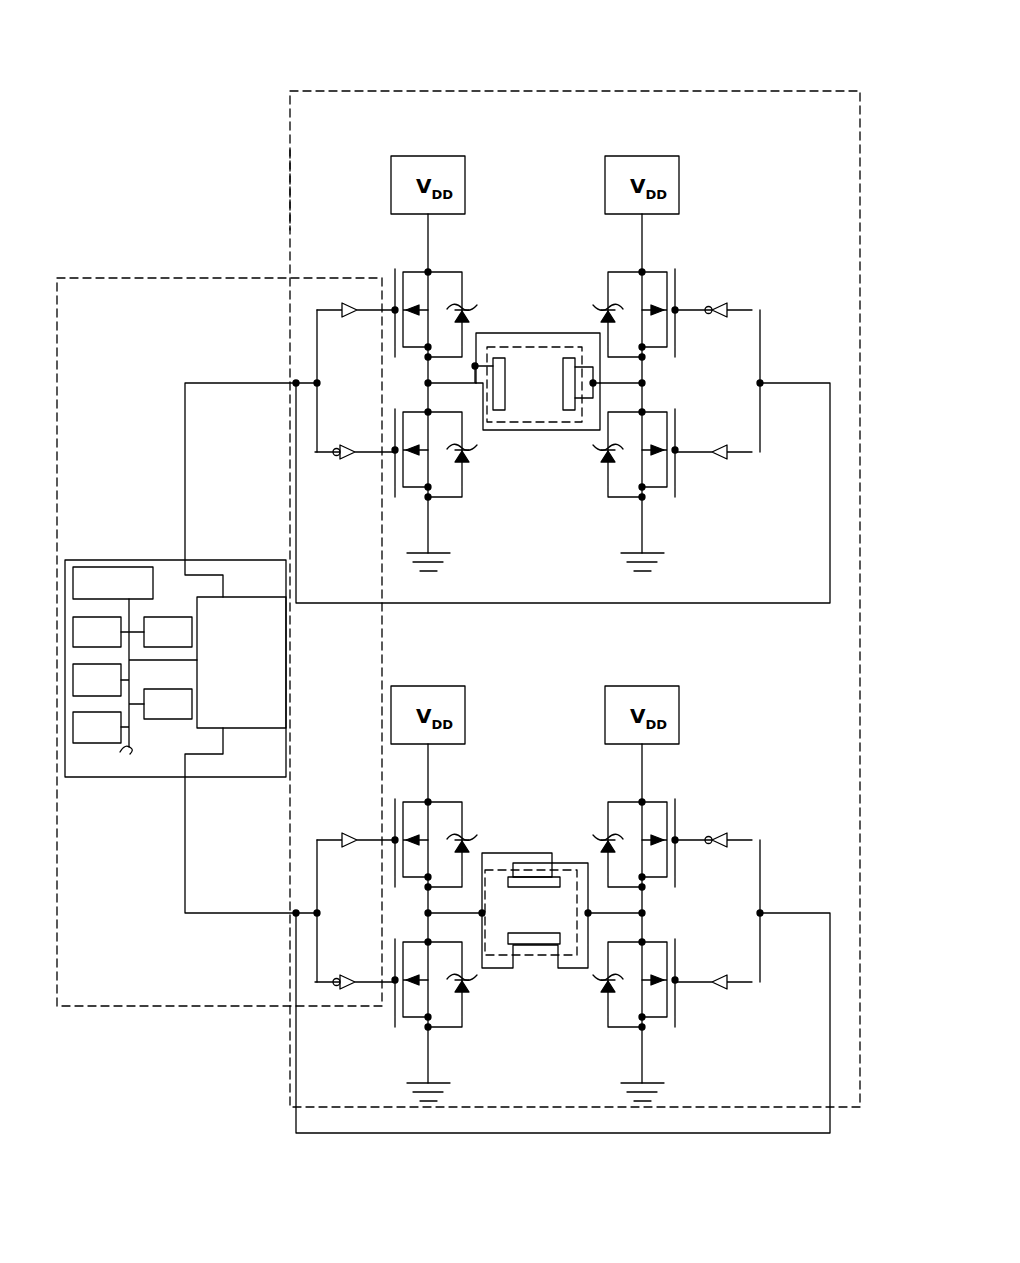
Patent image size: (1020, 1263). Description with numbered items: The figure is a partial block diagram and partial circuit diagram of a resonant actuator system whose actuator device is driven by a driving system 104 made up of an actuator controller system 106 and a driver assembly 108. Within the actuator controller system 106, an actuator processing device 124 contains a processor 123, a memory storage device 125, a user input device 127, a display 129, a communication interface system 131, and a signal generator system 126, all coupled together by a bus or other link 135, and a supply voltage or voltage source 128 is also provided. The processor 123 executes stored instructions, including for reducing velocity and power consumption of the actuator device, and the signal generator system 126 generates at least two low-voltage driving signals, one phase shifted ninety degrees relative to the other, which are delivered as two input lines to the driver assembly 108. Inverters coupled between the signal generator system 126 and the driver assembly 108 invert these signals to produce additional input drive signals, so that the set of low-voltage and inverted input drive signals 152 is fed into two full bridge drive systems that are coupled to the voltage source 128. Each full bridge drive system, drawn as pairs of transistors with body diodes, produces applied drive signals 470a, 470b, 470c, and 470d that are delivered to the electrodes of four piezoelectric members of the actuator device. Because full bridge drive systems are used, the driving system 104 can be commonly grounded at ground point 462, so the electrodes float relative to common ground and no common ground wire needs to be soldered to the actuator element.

The driving system 104 is at (781, 72).
The actuator controller system 106 is at (223, 277).
The driver assembly 108 is at (290, 190).
The actuator processing device 124 is at (140, 560).
The voltage source 128 is at (88, 567).
The processor 123 is at (97, 632).
The memory storage device 125 is at (97, 680).
The user input device 127 is at (97, 727).
The display 129 is at (168, 632).
The communication interface system 131 is at (168, 704).
The signal generator system 126 is at (248, 662).
The bus or other link 135 is at (132, 748).
The input drive signal 152 is at (411, 156).
The ground point 462 is at (418, 553).
The applied drive signal 470a is at (502, 332).
The applied drive signal 470b is at (527, 430).
The applied drive signal 470c is at (488, 853).
The applied drive signal 470d is at (556, 968).